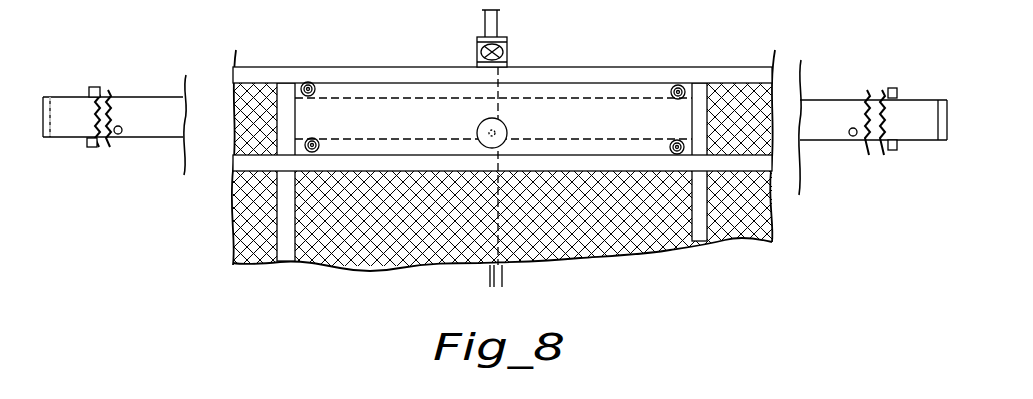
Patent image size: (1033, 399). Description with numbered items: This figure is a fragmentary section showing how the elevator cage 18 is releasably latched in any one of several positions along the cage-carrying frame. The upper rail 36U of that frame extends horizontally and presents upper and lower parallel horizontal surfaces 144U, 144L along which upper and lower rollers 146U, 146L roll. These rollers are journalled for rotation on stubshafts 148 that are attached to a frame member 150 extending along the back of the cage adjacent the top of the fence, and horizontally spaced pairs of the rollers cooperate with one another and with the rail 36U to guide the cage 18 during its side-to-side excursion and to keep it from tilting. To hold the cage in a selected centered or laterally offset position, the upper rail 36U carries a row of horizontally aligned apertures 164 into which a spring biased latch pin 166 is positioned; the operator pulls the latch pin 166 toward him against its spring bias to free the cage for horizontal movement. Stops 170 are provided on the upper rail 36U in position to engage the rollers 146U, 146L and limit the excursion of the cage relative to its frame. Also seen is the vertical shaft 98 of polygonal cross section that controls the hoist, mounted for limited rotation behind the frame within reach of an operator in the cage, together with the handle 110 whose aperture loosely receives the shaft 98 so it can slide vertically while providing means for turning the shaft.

The elevator cage 18 is at (656, 230).
The upper rail 36U is at (372, 108).
The shaft 98 is at (500, 27).
The handle 110 is at (478, 52).
The upper horizontal surface 144U is at (150, 97).
The lower horizontal surface 144L is at (150, 137).
The upper roller 146U is at (305, 85).
The lower roller 146L is at (310, 141).
The stubshaft 148 is at (313, 86).
The frame member 150 is at (612, 120).
The aperture 164 is at (120, 135).
The latch pin 166 is at (507, 130).
The stop 170 is at (94, 87).